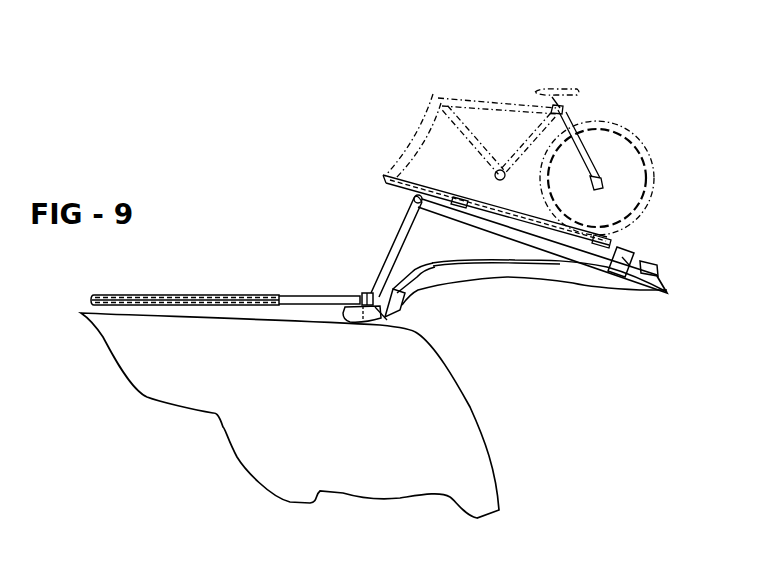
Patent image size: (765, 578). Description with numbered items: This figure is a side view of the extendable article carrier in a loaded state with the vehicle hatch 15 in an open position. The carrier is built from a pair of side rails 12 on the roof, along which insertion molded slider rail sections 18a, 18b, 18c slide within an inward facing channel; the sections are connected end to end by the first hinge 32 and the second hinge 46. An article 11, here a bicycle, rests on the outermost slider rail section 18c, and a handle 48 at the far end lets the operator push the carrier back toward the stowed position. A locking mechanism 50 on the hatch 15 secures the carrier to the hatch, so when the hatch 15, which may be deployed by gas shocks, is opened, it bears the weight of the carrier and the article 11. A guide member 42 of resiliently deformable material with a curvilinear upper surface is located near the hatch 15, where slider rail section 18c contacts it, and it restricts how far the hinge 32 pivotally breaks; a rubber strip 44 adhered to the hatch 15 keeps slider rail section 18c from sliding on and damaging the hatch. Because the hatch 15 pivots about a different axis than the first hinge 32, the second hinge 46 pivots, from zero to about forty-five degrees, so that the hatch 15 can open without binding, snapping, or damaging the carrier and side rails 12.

The article 11 is at (507, 86).
The side rails 12 is at (138, 300).
The hatch 15 is at (517, 265).
The slider rail section 18a is at (300, 303).
The slider rail section 18b is at (391, 261).
The slider rail section 18c is at (477, 217).
The first hinge 32 is at (411, 192).
The guide member 42 is at (354, 319).
The rubber strip 44 is at (432, 269).
The second hinge 46 is at (362, 293).
The handle 48 is at (658, 263).
The locking mechanism 50 is at (622, 263).